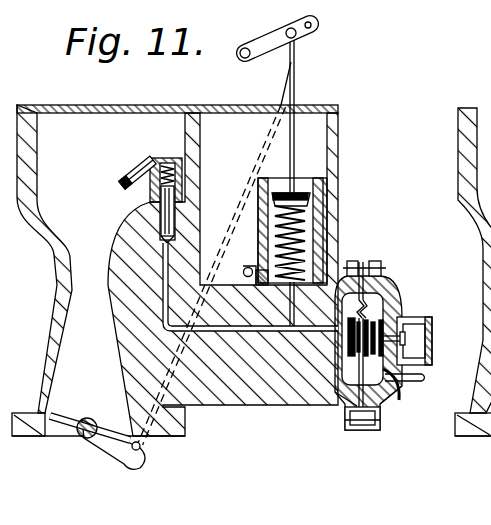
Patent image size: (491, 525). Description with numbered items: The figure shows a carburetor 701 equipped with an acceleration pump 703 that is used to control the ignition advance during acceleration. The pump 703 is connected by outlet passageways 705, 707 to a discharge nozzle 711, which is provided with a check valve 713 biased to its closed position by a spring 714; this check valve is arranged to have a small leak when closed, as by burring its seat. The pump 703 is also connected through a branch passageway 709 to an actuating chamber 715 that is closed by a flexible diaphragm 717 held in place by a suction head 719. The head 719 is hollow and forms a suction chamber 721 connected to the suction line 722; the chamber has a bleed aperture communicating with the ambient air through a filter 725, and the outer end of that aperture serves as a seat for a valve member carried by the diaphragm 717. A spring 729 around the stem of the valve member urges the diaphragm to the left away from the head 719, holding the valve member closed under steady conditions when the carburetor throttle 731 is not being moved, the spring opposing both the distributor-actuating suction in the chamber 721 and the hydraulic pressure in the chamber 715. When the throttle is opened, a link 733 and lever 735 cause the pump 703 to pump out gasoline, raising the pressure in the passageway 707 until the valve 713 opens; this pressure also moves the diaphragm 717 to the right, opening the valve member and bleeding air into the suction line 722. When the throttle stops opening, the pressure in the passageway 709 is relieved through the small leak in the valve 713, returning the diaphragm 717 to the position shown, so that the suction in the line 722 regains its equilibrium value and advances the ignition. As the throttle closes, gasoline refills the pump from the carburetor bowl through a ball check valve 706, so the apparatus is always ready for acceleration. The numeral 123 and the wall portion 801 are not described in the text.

The carburetor 701 is at (55, 261).
The acceleration pump 703 is at (313, 197).
The outlet passageway 705 is at (290, 311).
The ball check valve 706 is at (247, 268).
The outlet passageway 707 is at (268, 333).
The branch passageway 709 is at (285, 338).
The discharge nozzle 711 is at (137, 172).
The check valve 713 is at (157, 228).
The spring 714 is at (172, 158).
The actuating chamber 715 is at (336, 391).
The flexible diaphragm 717 is at (352, 404).
The suction head 719 is at (371, 305).
The suction chamber 721 is at (420, 323).
The suction line 722 is at (398, 397).
The pipe 123 is at (424, 377).
The filter 725 is at (433, 338).
The spring 729 is at (372, 320).
The carburetor throttle 731 is at (66, 414).
The link 733 is at (146, 449).
The lever 735 is at (259, 50).
The casing wall 801 is at (488, 272).